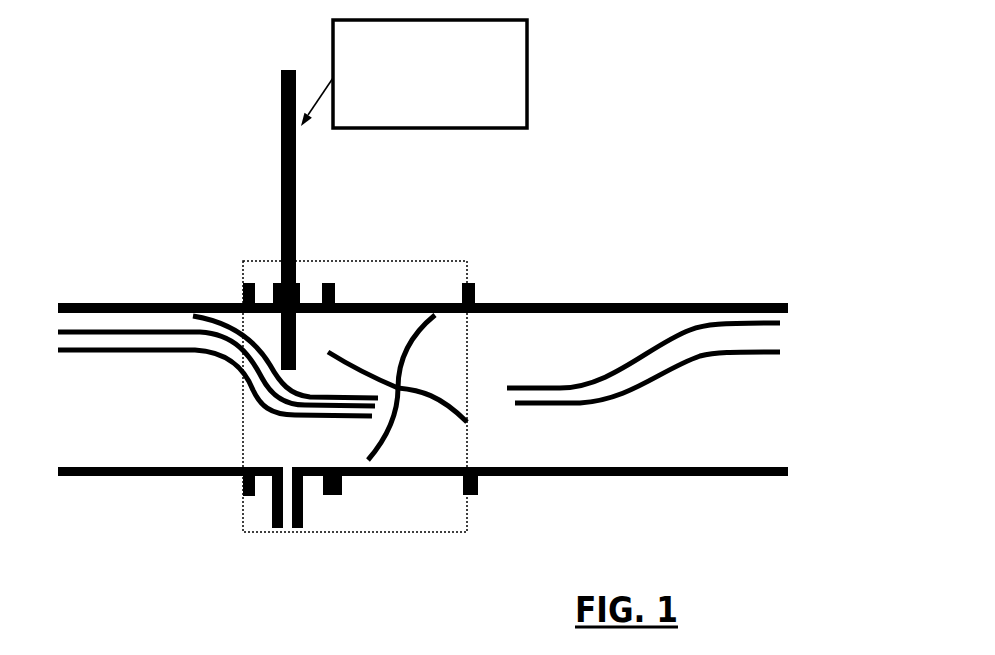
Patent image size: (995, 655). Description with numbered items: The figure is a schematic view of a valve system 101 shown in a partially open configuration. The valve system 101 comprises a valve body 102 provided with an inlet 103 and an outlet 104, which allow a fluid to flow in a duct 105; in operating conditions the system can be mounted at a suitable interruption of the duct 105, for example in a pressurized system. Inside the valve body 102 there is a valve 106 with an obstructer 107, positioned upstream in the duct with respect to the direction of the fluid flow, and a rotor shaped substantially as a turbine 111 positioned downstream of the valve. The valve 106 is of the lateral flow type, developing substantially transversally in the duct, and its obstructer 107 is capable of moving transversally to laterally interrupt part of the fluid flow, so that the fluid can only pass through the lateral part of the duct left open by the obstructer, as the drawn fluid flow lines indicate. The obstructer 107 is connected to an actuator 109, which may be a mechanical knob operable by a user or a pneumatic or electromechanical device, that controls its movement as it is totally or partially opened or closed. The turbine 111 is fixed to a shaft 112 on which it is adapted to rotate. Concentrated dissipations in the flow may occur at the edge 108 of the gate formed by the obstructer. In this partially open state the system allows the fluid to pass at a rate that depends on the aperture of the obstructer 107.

The valve system 101 is at (573, 209).
The valve body 102 is at (430, 261).
The inlet 103 is at (105, 423).
The outlet 104 is at (602, 423).
The duct 105 is at (147, 476).
The valve 106 is at (288, 522).
The obstructer 107 is at (278, 153).
The edge of the gate 108 is at (287, 370).
The actuator 109 is at (483, 50).
The turbine 111 is at (440, 397).
The shaft 112 is at (397, 393).